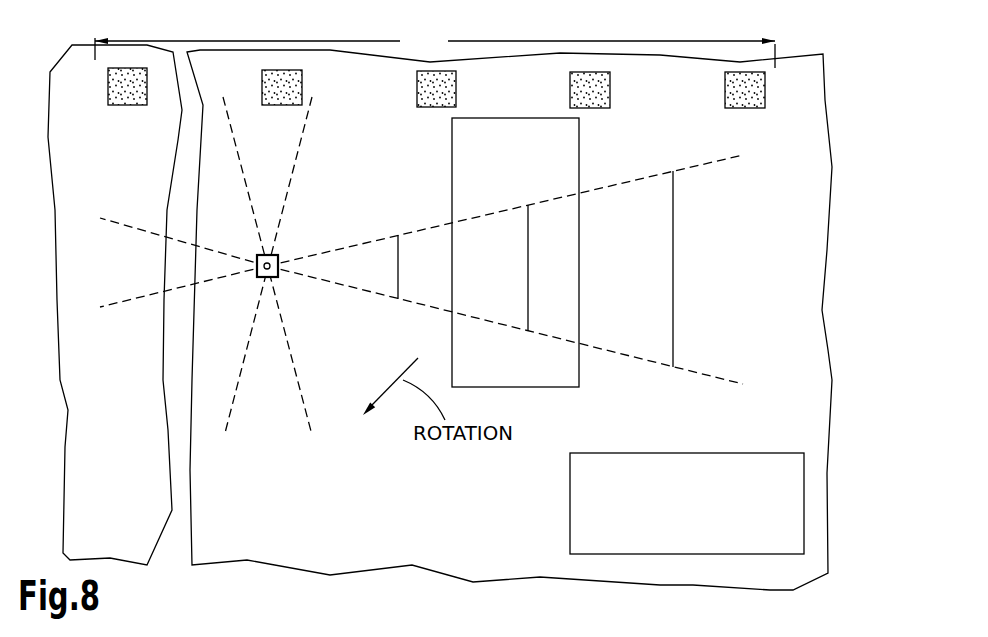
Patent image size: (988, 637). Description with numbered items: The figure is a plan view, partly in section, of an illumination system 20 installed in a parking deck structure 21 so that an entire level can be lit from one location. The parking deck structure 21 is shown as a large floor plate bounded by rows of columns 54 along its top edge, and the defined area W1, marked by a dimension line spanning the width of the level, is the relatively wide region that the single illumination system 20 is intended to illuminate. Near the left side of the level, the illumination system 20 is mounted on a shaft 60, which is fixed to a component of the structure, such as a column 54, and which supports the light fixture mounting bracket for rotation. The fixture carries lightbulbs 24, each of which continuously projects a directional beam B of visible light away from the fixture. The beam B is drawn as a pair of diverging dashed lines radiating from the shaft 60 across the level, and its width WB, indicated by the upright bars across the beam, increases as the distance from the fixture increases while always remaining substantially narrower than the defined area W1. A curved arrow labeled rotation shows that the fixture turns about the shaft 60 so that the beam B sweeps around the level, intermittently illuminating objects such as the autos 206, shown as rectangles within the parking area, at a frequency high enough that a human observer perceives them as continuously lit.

The parking deck structure 21 is at (790, 123).
The column 54 is at (133, 86).
The defined area W1 is at (435, 48).
The directional beam B is at (602, 187).
The beam width WB is at (674, 287).
The shaft 60 is at (273, 262).
The lightbulb 24 is at (257, 267).
The illumination system 20 is at (244, 295).
The auto 206 is at (530, 366).